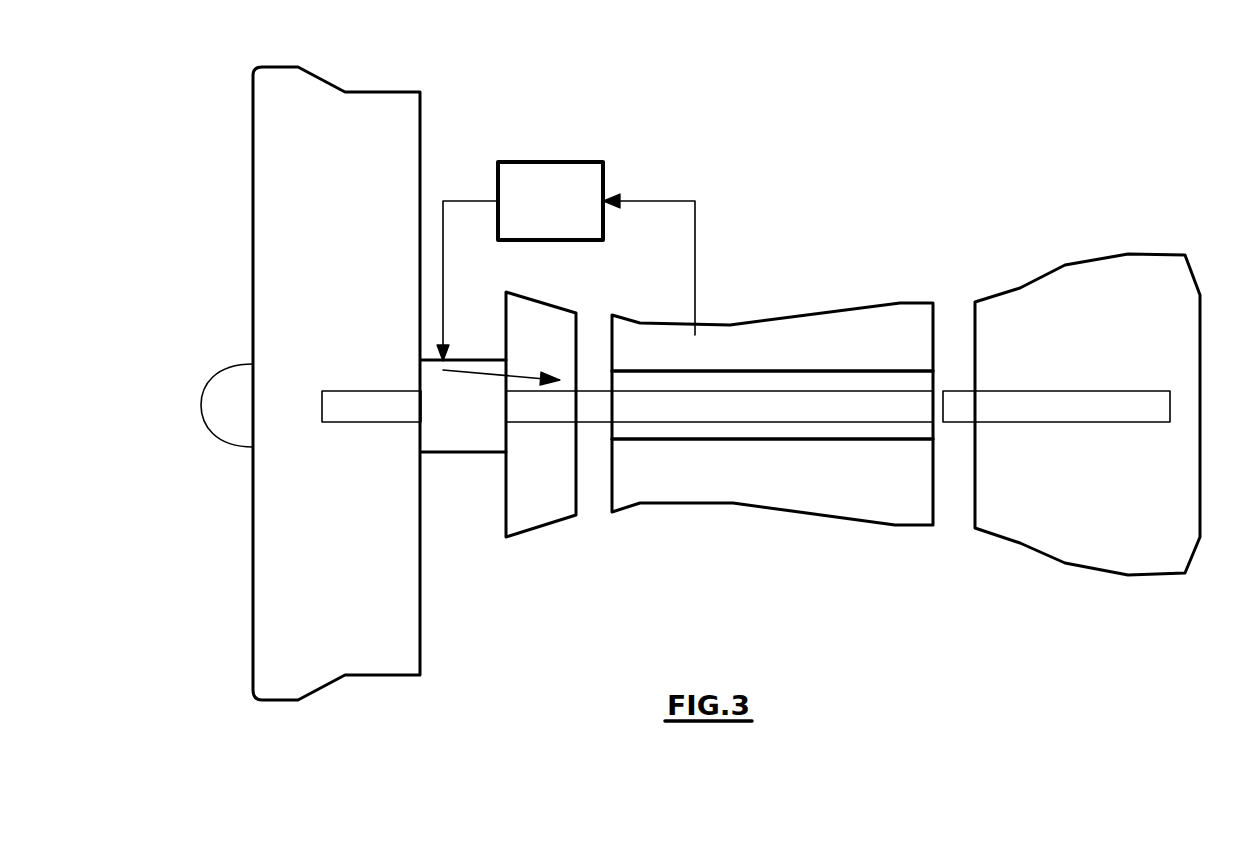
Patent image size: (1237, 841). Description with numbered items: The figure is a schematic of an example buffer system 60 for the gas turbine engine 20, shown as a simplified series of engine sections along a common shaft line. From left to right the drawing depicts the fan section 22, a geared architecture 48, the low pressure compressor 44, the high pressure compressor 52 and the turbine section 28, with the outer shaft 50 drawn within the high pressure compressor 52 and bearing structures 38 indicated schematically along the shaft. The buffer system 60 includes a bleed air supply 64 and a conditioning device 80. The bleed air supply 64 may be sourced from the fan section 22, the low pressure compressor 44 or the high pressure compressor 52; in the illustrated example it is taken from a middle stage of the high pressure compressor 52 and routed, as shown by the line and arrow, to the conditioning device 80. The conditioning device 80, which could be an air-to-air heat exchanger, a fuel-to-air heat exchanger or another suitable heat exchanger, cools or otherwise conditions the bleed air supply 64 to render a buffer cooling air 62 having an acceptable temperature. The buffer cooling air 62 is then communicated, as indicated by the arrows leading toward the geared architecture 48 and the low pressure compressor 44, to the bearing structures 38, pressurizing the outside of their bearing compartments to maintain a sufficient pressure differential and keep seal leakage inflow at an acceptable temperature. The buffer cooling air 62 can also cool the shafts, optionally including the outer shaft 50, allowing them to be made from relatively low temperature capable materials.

The gas turbine engine 20 is at (1022, 208).
The fan section 22 is at (350, 625).
The turbine section 28 is at (1109, 501).
The bearing structures 38 is at (360, 406).
The low pressure compressor 44 is at (535, 503).
The geared architecture 48 is at (470, 432).
The outer shaft 50 is at (748, 369).
The high pressure compressor 52 is at (798, 490).
The buffer system 60 is at (561, 133).
The buffer cooling air 62 is at (480, 201).
The bleed air supply 64 is at (697, 279).
The conditioning device 80 is at (590, 162).